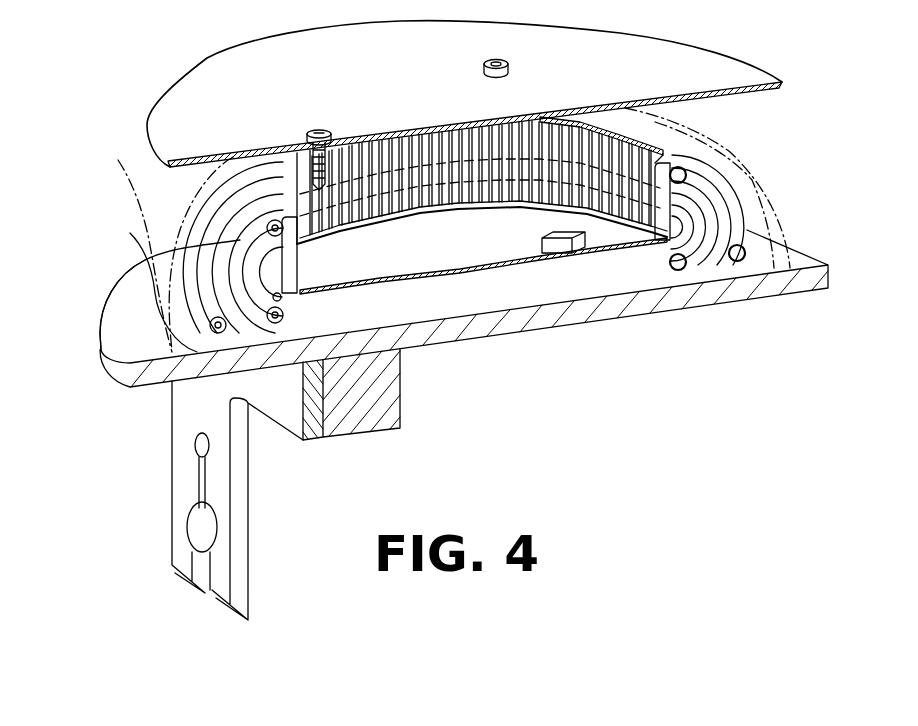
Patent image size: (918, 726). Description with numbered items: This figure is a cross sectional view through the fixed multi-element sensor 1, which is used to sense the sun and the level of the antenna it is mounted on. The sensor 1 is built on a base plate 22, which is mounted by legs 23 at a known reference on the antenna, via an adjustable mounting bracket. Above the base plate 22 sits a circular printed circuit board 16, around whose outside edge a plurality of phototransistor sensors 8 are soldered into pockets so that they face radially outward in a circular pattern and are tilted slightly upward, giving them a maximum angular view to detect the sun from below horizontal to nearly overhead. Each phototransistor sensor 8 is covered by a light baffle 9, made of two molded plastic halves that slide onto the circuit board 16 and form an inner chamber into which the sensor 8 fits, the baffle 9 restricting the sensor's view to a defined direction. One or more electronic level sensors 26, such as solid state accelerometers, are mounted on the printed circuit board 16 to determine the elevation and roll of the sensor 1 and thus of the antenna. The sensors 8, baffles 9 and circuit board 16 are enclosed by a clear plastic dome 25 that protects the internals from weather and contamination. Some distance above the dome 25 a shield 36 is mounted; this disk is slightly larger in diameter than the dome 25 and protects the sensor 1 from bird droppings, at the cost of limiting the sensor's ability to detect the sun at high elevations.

The sensor 1 is at (100, 338).
The phototransistor sensor 8 is at (317, 293).
The light baffle 9 is at (205, 288).
The printed circuit board 16 is at (433, 270).
The base plate 22 is at (738, 300).
The leg 23 is at (172, 489).
The clear plastic dome 25 is at (160, 197).
The electronic level sensor 26 is at (542, 245).
The shield 36 is at (178, 90).